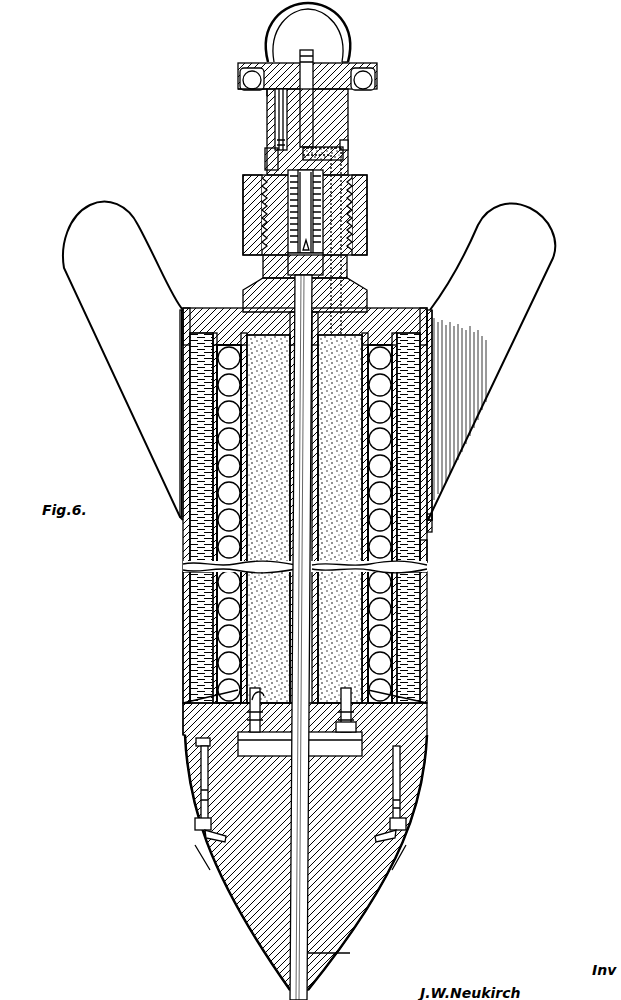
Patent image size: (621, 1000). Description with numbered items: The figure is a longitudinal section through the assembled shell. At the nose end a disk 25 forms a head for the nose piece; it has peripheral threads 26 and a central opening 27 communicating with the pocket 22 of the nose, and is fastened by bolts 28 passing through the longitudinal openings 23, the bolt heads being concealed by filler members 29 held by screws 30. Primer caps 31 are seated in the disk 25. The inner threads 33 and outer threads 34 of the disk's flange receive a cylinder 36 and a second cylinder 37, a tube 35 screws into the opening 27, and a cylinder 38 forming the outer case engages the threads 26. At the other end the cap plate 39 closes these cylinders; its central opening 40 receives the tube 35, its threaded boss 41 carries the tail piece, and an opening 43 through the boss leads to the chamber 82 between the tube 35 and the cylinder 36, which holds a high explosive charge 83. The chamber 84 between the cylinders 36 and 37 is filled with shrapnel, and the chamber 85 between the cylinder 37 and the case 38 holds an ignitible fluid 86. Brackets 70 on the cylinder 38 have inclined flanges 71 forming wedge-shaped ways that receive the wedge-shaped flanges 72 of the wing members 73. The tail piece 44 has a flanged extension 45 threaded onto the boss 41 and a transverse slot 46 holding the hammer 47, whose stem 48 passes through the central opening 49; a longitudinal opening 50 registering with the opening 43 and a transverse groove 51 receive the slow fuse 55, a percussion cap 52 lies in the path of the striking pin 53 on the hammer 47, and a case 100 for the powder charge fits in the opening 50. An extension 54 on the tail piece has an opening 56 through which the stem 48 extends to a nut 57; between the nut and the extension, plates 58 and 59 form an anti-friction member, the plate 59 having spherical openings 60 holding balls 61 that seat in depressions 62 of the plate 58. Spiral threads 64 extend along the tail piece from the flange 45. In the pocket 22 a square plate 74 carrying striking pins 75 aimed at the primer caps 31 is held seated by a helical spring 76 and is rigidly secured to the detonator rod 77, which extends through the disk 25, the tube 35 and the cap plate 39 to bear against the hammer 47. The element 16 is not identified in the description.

The screw 16 is at (286, 752).
The pocket 22 is at (420, 738).
The longitudinal openings 23 is at (204, 756).
The disk 25 is at (408, 710).
The threads 26 is at (420, 723).
The central opening 27 is at (418, 668).
The bolts 28 is at (205, 793).
The filler members 29 is at (205, 828).
The screws 30 is at (205, 838).
The primer caps 31 is at (185, 698).
The inner threads 33 is at (183, 718).
The outer threads 34 is at (215, 700).
The tube 35 is at (430, 533).
The cylinder 36 is at (428, 603).
The second cylinder 37 is at (184, 666).
The cylinder 38 is at (183, 598).
The cap plate 39 is at (376, 311).
The opening 40 is at (352, 278).
The annular threaded boss 41 is at (262, 283).
The opening 43 is at (367, 290).
The tail piece 44 is at (349, 163).
The flanged extension 45 is at (183, 320).
The slot 46 is at (368, 185).
The hammer 47 is at (368, 222).
The stem 48 is at (349, 111).
The central opening 49 is at (266, 156).
The longitudinal opening 50 is at (368, 203).
The transverse groove 51 is at (349, 143).
The percussion cap 52 is at (248, 181).
The striking pin 53 is at (290, 248).
The extension 54 is at (276, 116).
The slow fuse 55 is at (344, 154).
The opening 56 is at (268, 92).
The nut 57 is at (314, 58).
The plate 58 is at (377, 67).
The plate 59 is at (380, 82).
The spherical openings 60 is at (247, 72).
The anti-frictional balls 61 is at (259, 63).
The depressions 62 is at (349, 64).
The spiral threads 64 is at (262, 198).
The brackets 70 is at (385, 906).
The flanges 71 is at (356, 956).
The wedge shaped flanges 72 is at (190, 386).
The wing members 73 is at (106, 352).
The square plate 74 is at (204, 856).
The striking pins 75 is at (200, 745).
The helical spring 76 is at (400, 716).
The detonator rod 77 is at (314, 996).
The chamber 82 is at (432, 510).
The high explosive charge 83 is at (426, 482).
The chamber 84 is at (426, 553).
The chamber 85 is at (408, 582).
The ignitible fluid 86 is at (408, 437).
The case 100 is at (345, 247).